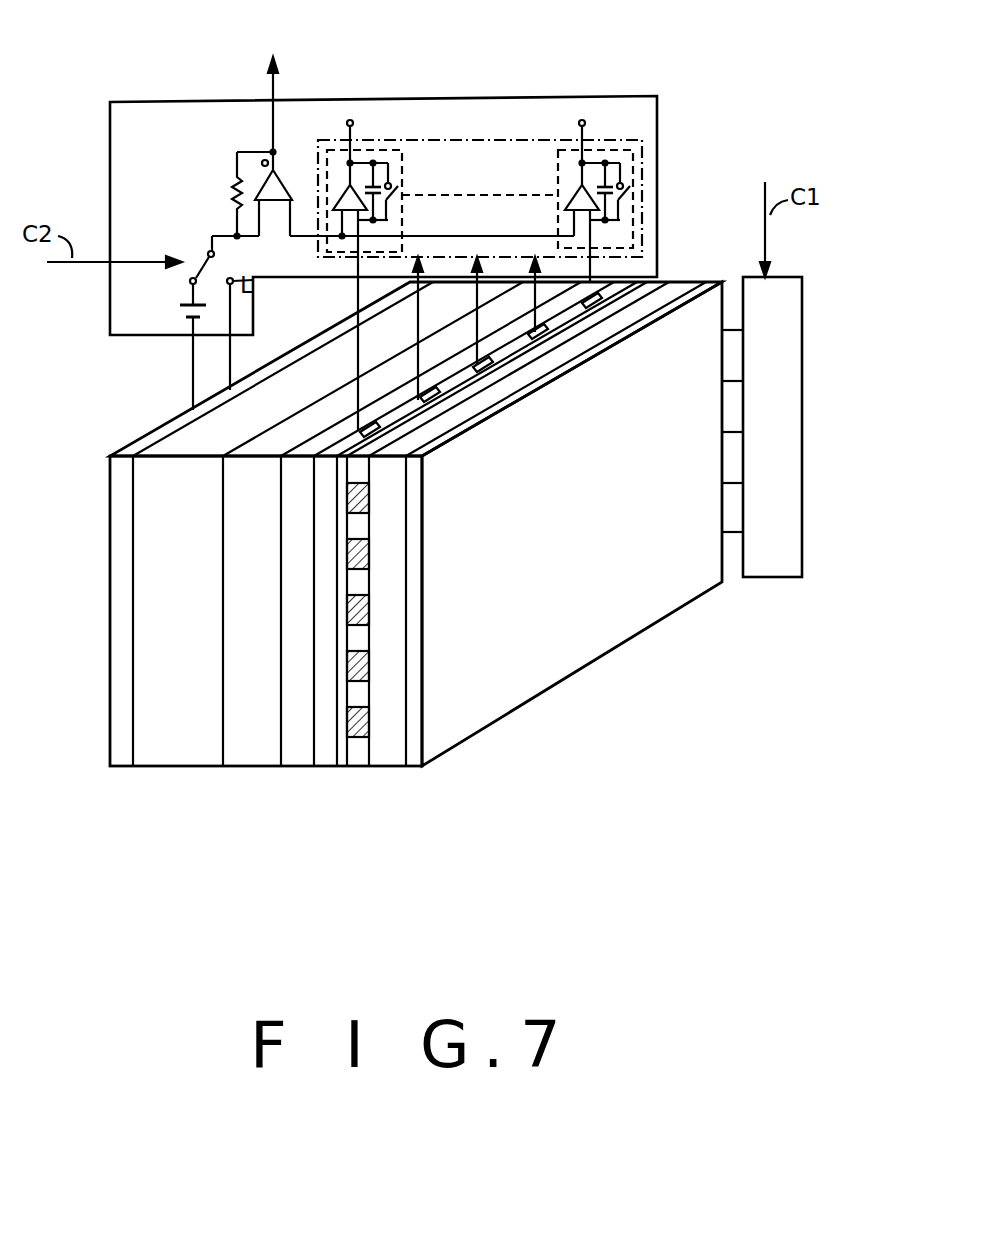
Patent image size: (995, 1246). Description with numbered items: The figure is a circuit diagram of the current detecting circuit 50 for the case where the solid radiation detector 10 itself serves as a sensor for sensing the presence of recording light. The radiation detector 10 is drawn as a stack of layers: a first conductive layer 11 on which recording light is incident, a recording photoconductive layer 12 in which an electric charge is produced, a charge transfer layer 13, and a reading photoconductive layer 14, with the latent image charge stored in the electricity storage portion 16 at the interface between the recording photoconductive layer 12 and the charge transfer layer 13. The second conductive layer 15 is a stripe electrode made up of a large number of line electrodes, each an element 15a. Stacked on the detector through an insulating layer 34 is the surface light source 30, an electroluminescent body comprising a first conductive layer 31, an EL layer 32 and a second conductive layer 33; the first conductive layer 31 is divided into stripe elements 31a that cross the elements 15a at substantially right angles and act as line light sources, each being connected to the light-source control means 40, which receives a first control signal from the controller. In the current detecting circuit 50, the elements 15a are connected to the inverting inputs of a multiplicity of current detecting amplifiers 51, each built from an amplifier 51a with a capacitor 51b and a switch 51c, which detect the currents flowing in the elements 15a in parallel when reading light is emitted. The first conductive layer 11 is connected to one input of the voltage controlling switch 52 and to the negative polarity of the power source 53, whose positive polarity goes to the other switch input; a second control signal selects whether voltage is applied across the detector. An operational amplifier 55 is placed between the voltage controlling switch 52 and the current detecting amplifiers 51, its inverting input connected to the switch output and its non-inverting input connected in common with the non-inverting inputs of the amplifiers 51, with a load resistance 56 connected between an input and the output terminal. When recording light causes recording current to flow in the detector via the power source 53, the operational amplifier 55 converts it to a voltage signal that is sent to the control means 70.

The solid radiation detector 10 is at (415, 577).
The first conductive layer 11 is at (122, 767).
The recording photoconductive layer 12 is at (160, 767).
The charge transfer layer 13 is at (237, 767).
The reading photoconductive layer 14 is at (298, 767).
The second conductive layer (stripe electrode) 15 is at (323, 767).
The element 15a is at (635, 282).
The electricity storage portion 16 is at (214, 746).
The surface light source 30 is at (516, 596).
The first conductive layer 31 is at (502, 572).
The element (line light source) 31a is at (360, 740).
The EL layer 32 is at (392, 767).
The second conductive layer 33 is at (434, 814).
The insulating layer 34 is at (342, 767).
The light-source control means 40 is at (803, 298).
The current detecting circuit 50 is at (628, 96).
The current detecting amplifier 51 is at (480, 275).
The amplifier 51a is at (362, 218).
The capacitor 51b is at (378, 200).
The switch 51c is at (402, 193).
The voltage controlling switch 52 is at (197, 253).
The power source (voltage applying means) 53 is at (178, 316).
The operational amplifier 55 is at (282, 172).
The load resistance 56 is at (232, 190).
The control means 70 is at (304, 95).